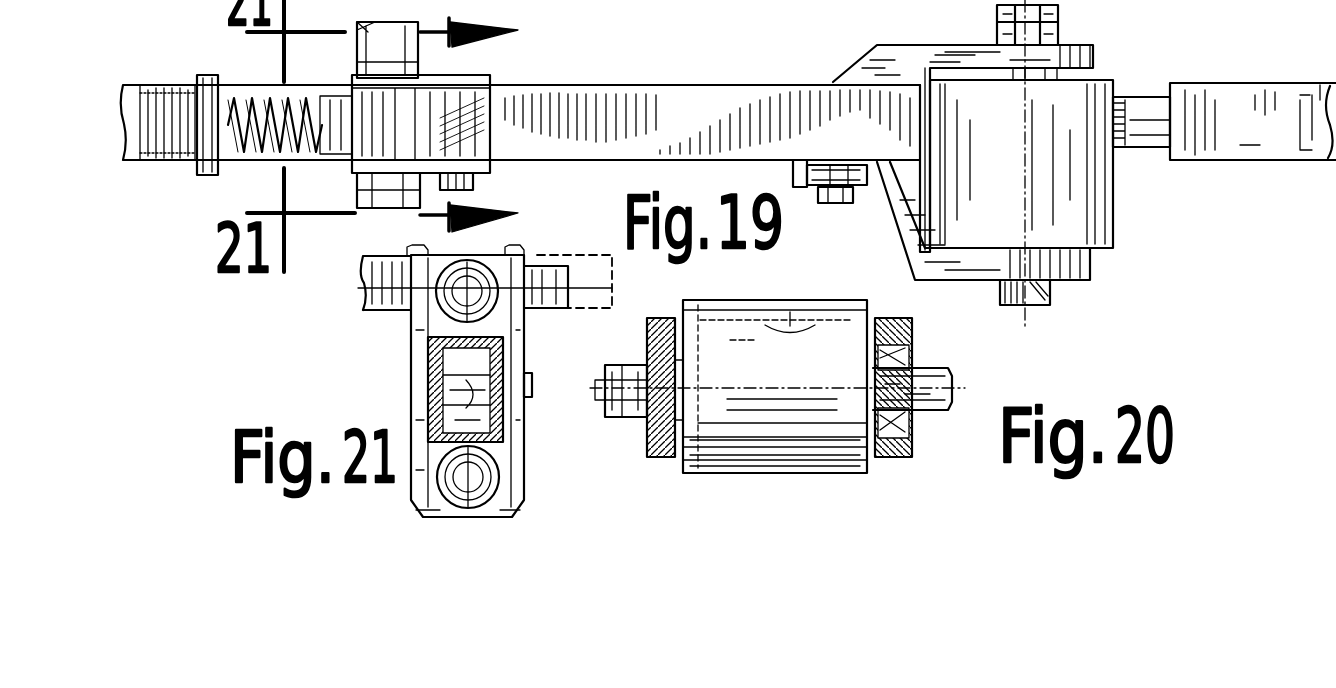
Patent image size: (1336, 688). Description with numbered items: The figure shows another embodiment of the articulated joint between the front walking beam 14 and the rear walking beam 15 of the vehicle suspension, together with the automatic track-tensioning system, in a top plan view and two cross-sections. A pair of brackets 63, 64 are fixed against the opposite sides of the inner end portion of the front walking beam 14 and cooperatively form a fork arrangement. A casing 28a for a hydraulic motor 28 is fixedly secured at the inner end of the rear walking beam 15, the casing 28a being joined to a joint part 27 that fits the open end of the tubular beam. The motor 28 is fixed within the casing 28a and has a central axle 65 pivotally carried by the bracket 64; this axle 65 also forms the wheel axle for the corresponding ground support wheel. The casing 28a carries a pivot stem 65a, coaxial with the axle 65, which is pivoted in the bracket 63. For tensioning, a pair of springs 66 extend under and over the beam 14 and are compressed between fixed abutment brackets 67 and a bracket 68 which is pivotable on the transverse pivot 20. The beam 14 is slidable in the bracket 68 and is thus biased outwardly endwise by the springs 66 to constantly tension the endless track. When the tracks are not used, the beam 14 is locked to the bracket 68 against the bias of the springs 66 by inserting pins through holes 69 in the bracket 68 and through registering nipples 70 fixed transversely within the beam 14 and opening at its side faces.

In FIG. 19, the front walking beam 14 is at (573, 107).
In FIG. 21, the front walking beam 14 is at (428, 370).
In FIG. 19, the rear walking beam 15 is at (1287, 100).
In FIG. 19, the transverse pivot 20 is at (387, 200).
In FIG. 21, the transverse pivot 20 is at (548, 335).
In FIG. 19, the joint part 27 is at (1147, 110).
In FIG. 19, the hydraulic motor 28 is at (1113, 197).
In FIG. 20, the hydraulic motor 28 is at (810, 308).
In FIG. 20, the casing 28a is at (730, 337).
In FIG. 19, the bracket 63 is at (877, 62).
In FIG. 20, the bracket 63 is at (662, 320).
In FIG. 19, the bracket 64 is at (892, 243).
In FIG. 20, the bracket 64 is at (910, 342).
In FIG. 19, the central axle 65 is at (1047, 303).
In FIG. 20, the central axle 65 is at (950, 373).
In FIG. 20, the pivot stem 65a is at (597, 368).
In FIG. 19, the spring 66 is at (255, 162).
In FIG. 21, the spring 66 is at (450, 320).
In FIG. 19, the fixed abutment bracket 67 is at (215, 176).
In FIG. 19, the bracket 68 is at (467, 82).
In FIG. 21, the bracket 68 is at (410, 396).
In FIG. 19, the hole 69 is at (475, 183).
In FIG. 21, the hole 69 is at (507, 367).
In FIG. 21, the nipple 70 is at (500, 420).